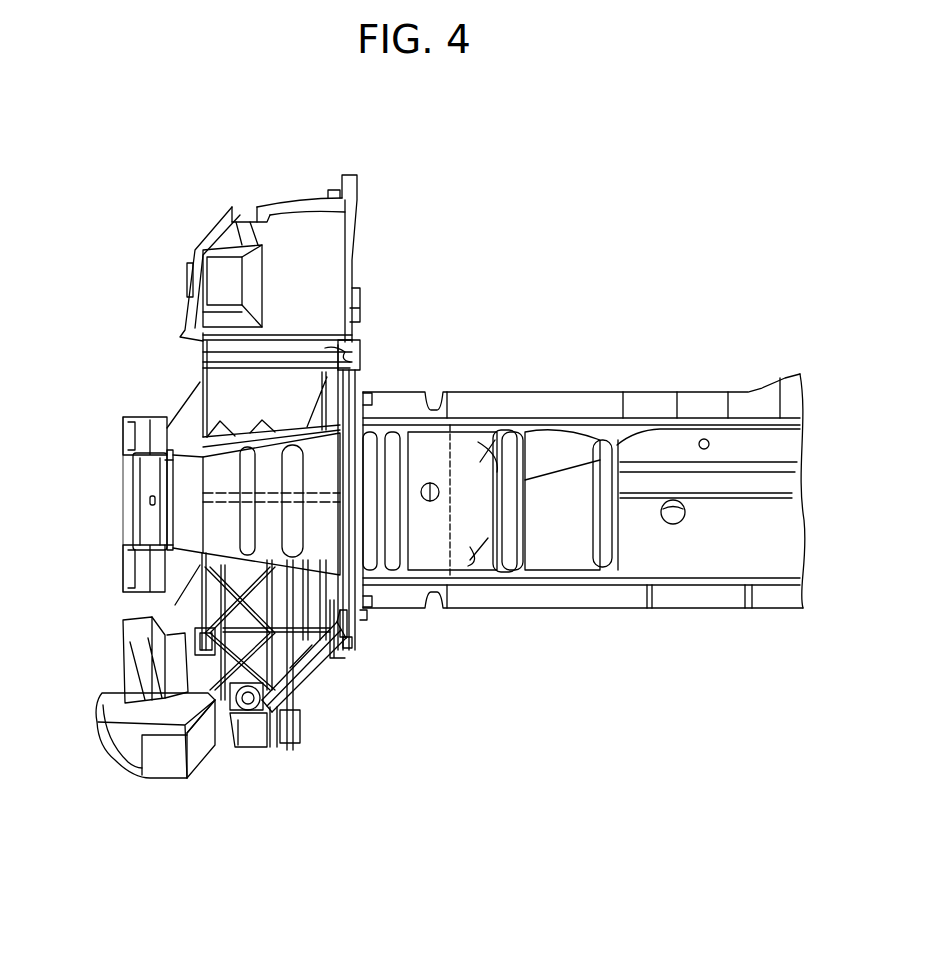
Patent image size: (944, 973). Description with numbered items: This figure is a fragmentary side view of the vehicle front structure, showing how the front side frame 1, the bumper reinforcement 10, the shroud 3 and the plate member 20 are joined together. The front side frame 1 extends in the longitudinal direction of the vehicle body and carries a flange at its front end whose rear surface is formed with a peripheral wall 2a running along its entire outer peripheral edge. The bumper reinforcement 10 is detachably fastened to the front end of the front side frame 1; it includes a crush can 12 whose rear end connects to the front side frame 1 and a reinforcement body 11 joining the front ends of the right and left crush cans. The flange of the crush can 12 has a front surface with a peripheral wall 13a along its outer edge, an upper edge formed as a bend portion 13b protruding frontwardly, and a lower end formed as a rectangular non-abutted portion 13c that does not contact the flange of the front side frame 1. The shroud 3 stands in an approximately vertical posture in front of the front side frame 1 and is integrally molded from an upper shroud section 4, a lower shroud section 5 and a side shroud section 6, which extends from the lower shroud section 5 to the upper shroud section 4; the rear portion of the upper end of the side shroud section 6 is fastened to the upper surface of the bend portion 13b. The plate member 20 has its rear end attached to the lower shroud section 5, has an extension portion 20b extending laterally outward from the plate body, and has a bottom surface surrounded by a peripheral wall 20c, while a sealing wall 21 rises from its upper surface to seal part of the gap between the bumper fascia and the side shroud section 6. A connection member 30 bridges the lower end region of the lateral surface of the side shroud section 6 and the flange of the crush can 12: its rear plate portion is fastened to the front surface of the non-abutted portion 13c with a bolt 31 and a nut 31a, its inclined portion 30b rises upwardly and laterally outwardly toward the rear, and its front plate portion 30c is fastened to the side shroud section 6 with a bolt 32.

The front side frame 1 is at (705, 558).
The peripheral wall 2a is at (362, 615).
The shroud 3 is at (374, 232).
The upper shroud section 4 is at (297, 200).
The lower shroud section 5 is at (293, 733).
The side shroud section 6 is at (200, 375).
The bumper reinforcement 10 is at (115, 525).
The reinforcement body 11 is at (137, 470).
The crush can 12 is at (327, 457).
The peripheral wall 13a is at (345, 398).
The bend portion 13b is at (325, 350).
The non-abutted portion 13c is at (338, 660).
The plate member 20 is at (100, 752).
The extension portion 20b is at (167, 712).
The peripheral wall 20c is at (198, 752).
The sealing wall 21 is at (123, 635).
The connection member 30 is at (322, 675).
The inclined portion 30b is at (305, 677).
The front plate portion 30c is at (265, 707).
The bolt 31 is at (352, 633).
The nut 31a is at (350, 648).
The bolt 32 is at (248, 700).